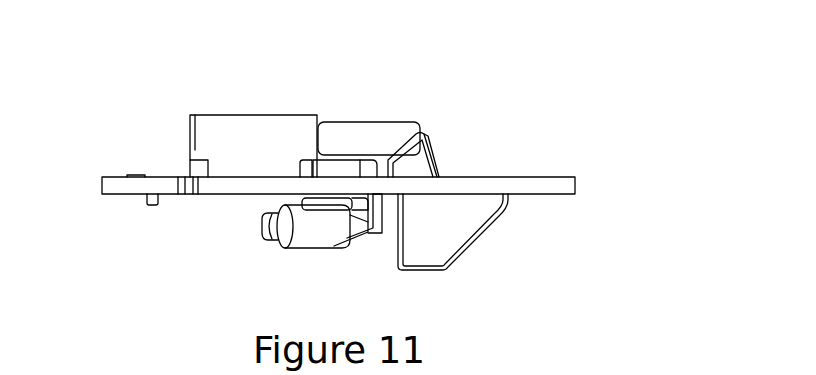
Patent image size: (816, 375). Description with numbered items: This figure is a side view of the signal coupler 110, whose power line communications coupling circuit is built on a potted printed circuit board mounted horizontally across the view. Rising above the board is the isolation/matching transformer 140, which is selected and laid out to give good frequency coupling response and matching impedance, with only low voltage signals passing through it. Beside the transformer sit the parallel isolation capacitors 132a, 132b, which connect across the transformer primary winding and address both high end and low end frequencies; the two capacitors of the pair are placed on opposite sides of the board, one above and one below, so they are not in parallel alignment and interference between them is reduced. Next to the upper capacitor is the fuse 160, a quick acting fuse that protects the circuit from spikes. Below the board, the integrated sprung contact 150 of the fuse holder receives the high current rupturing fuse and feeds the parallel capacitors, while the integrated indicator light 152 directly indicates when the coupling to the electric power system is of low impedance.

The signal coupler 110 is at (545, 177).
The isolation/matching transformer 140 is at (242, 132).
The isolation capacitor 132a is at (343, 163).
The fuse 160 is at (375, 130).
The sprung contact 150 is at (473, 250).
The integrated indicator light 152 is at (307, 228).
The isolation capacitor 132b is at (333, 205).